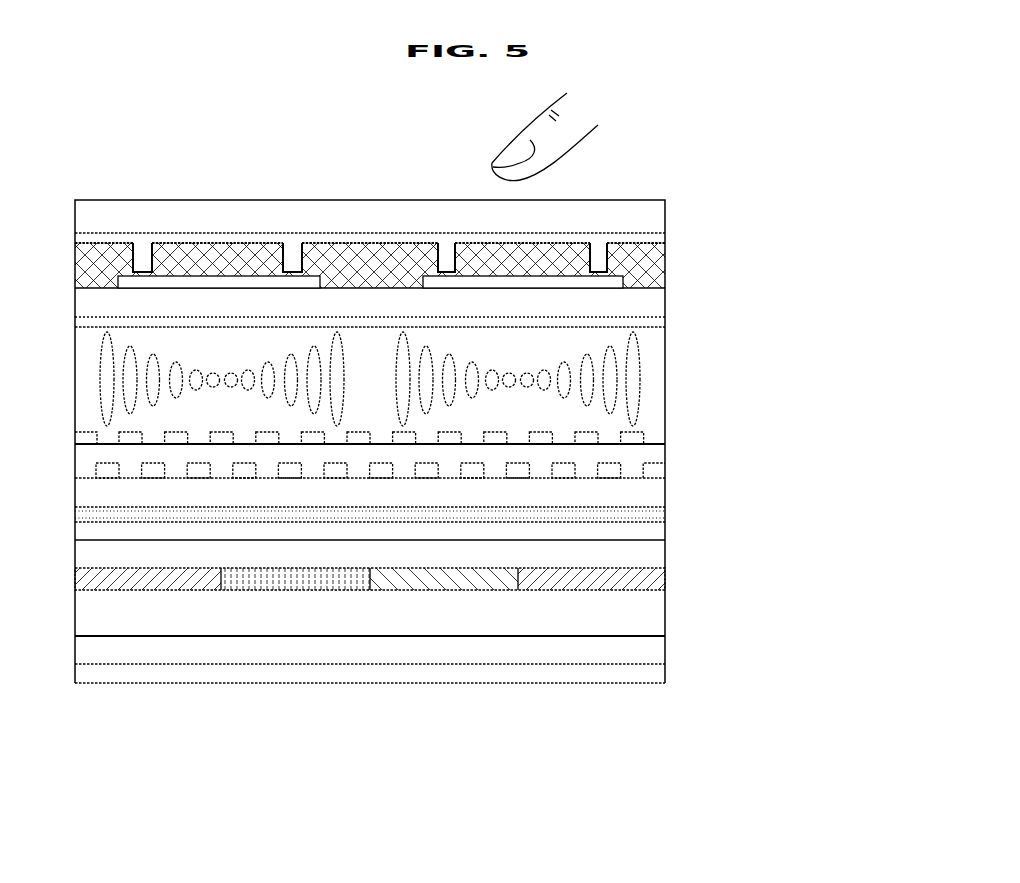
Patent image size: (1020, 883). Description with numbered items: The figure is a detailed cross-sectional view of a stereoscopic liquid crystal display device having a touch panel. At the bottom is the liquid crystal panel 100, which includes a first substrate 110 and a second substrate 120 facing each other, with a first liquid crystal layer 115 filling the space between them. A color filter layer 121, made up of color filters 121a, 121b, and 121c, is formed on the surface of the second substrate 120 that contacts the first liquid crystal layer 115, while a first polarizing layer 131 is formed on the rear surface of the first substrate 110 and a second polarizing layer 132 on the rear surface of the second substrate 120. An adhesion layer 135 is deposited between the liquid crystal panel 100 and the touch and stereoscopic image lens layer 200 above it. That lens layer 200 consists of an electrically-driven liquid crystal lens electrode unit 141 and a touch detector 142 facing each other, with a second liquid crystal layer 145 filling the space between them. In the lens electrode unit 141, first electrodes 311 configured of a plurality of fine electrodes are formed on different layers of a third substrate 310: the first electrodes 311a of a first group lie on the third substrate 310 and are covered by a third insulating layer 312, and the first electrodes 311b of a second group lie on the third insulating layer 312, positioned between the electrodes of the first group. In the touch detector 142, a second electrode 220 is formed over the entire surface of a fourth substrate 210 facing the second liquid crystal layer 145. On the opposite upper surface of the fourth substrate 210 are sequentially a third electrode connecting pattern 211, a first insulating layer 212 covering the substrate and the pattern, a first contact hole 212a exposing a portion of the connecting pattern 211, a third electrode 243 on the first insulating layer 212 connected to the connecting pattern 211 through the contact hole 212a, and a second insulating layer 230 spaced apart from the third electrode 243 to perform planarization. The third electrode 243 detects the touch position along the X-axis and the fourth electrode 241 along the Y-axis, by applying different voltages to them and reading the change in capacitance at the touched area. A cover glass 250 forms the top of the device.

The liquid crystal panel 100 is at (739, 535).
The first substrate 110 is at (655, 655).
The first liquid crystal layer 115 is at (655, 615).
The second substrate 120 is at (655, 560).
The color filter layer 121 is at (370, 679).
The color filter 121a is at (152, 578).
The color filter 121b is at (292, 578).
The color filter 121c is at (444, 647).
The first polarizing layer 131 is at (655, 676).
The second polarizing layer 132 is at (655, 537).
The adhesion layer 135 is at (655, 516).
The electrically-driven liquid crystal lens electrode unit 141 is at (788, 418).
The touch detector 142 is at (739, 234).
The second liquid crystal layer 145 is at (655, 374).
The touch and stereoscopic image lens layer 200 is at (856, 278).
The fourth substrate 210 is at (655, 306).
The third electrode connecting pattern 211 is at (655, 262).
The first insulating layer 212 is at (655, 283).
The first contact hole 212a is at (450, 245).
The second electrode 220 is at (655, 327).
The second insulating layer 230 is at (183, 241).
The fourth electrode 241 is at (222, 244).
The third electrode 243 is at (655, 239).
The cover glass 250 is at (282, 209).
The third substrate 310 is at (655, 491).
The first electrodes 311 is at (742, 408).
The first electrodes of a first group 311a is at (646, 446).
The first electrodes of a second group 311b is at (641, 432).
The third insulating layer 312 is at (652, 468).